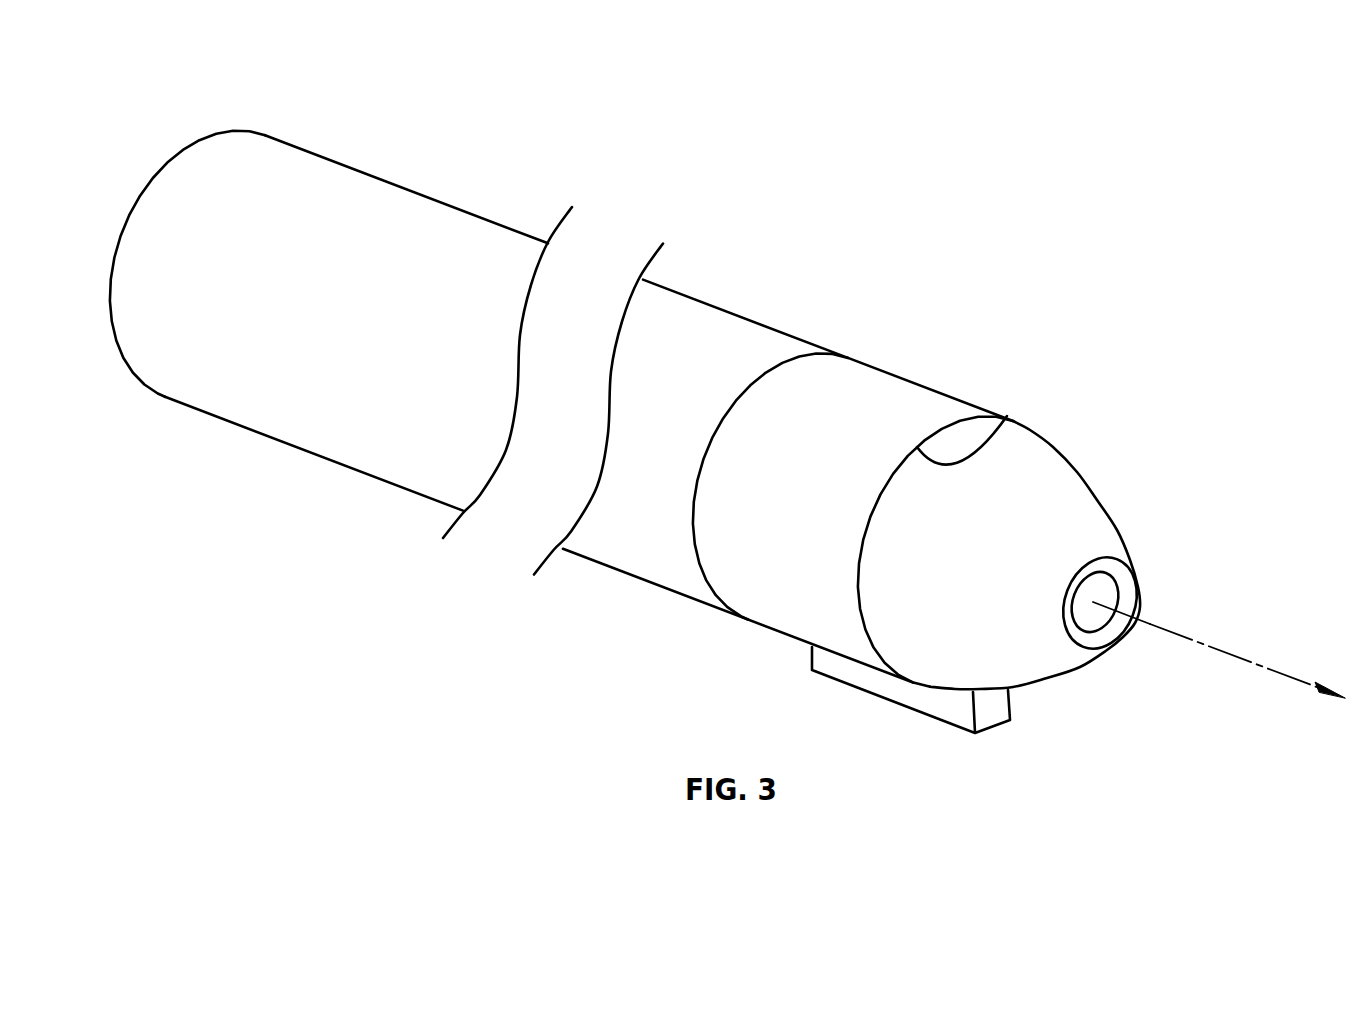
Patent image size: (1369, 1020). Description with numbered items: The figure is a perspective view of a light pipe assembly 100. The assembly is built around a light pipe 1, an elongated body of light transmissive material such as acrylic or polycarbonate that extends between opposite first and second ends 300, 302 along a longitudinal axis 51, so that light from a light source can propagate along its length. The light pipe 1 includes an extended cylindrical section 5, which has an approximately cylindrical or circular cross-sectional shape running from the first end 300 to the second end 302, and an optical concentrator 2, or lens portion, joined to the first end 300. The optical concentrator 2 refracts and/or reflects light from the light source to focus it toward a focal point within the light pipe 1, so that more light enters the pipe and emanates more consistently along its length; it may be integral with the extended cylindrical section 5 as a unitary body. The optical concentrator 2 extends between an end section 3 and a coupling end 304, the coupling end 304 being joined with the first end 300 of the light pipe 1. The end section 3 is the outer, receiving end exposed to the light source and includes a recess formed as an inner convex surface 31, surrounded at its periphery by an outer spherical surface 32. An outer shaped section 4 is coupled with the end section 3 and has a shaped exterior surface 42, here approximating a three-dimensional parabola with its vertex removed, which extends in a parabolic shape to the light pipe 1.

The light pipe assembly 100 is at (1013, 287).
The light pipe 1 is at (350, 210).
The second end 302 is at (185, 149).
The extended cylindrical section 5 is at (685, 308).
The optical concentrator 2 is at (1035, 503).
The coupling end 304 is at (893, 465).
The first end 300 is at (983, 443).
The outer shaped section 4 is at (1092, 498).
The end section 3 is at (1132, 605).
The outer spherical surface 32 is at (1117, 572).
The inner convex surface 31 is at (1102, 617).
The shaped exterior surface 42 is at (1040, 678).
The longitudinal axis 51 is at (1255, 665).